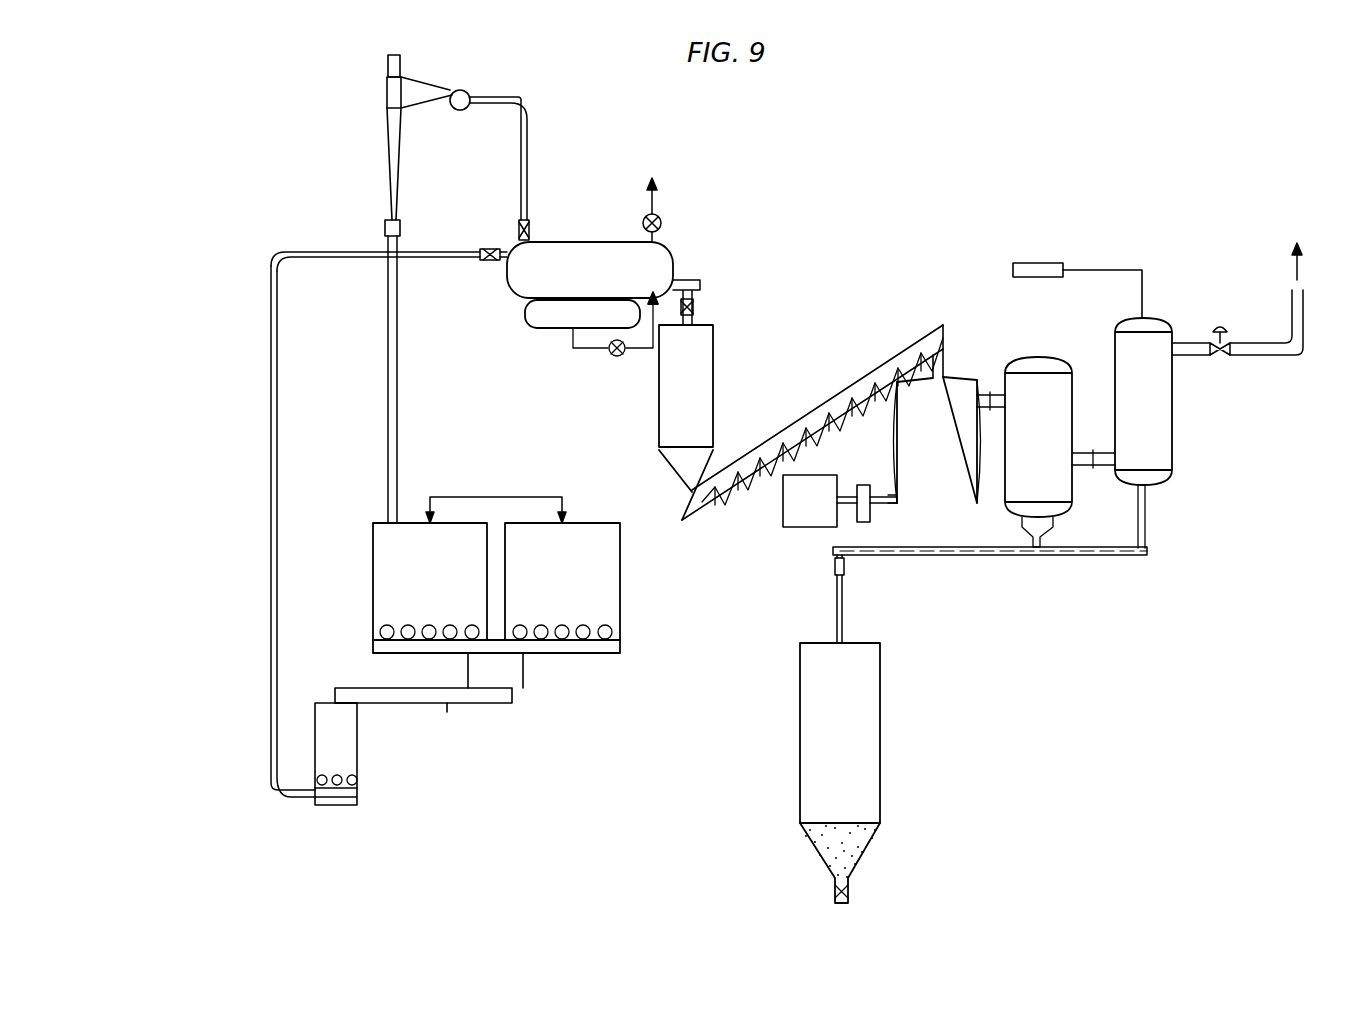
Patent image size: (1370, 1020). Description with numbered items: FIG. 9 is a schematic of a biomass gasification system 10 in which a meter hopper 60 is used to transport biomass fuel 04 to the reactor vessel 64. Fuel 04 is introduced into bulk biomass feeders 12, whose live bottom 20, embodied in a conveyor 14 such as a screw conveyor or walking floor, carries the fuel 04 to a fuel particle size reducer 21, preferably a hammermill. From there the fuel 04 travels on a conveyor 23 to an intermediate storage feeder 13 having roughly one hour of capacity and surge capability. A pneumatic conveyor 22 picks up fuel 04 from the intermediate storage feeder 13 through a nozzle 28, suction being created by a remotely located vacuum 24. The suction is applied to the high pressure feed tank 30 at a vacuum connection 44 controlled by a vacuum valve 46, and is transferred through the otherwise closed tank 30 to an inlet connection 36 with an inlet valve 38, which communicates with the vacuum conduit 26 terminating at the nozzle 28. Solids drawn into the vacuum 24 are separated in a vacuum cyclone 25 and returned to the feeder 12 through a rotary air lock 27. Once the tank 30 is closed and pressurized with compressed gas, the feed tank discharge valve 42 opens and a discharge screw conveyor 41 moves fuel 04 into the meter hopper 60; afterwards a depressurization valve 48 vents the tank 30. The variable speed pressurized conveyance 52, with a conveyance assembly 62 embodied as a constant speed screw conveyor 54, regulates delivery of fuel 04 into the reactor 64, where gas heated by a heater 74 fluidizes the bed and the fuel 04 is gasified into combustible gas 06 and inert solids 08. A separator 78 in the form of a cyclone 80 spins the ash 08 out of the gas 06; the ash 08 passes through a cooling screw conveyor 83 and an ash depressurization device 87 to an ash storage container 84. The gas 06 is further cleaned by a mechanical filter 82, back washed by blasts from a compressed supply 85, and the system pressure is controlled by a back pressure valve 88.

The pneumatic conveyor 22 is at (258, 180).
The biomass gasification system 10 is at (987, 140).
The separator 78 is at (1152, 238).
The pressurized conveyance 52 is at (806, 273).
The vacuum cyclone 25 is at (358, 148).
The rotary air lock 27 is at (402, 228).
The vacuum connection 44 is at (532, 142).
The vacuum valve 46 is at (532, 220).
The depressurization valve 48 is at (662, 208).
The inlet connection 36 is at (458, 265).
The inlet valve 38 is at (490, 268).
The vacuum conduit 26 is at (268, 700).
The vacuum 24 is at (303, 808).
The high pressure feed tank 30 is at (586, 270).
The discharge screw conveyor 41 is at (692, 278).
The feed tank discharge valve 42 is at (700, 305).
The meter hopper 60 is at (702, 397).
The conveyance assembly 62 is at (808, 390).
The screw conveyor 54 is at (806, 430).
The reactor vessel 64 is at (934, 440).
The heater 74 is at (872, 520).
The cyclone 80 is at (1024, 452).
The mechanical filter 82 is at (1141, 433).
The compressed supply 85 is at (1042, 263).
The back pressure valve 88 is at (1219, 362).
The combustible gas 06 is at (1272, 286).
The cooling screw conveyor 83 is at (1133, 565).
The ash depressurization device 87 is at (846, 568).
The ash storage container 84 is at (840, 773).
The inert solids 08 is at (870, 840).
The biomass fuel 04 is at (496, 492).
The conveyor 14 is at (640, 642).
The bulk biomass feeder 12 is at (496, 581).
The live bottom 20 is at (458, 622).
The fuel particle size reducer 21 is at (523, 670).
The conveyor 23 is at (447, 712).
The intermediate storage feeder 13 is at (358, 730).
The nozzle 28 is at (322, 797).